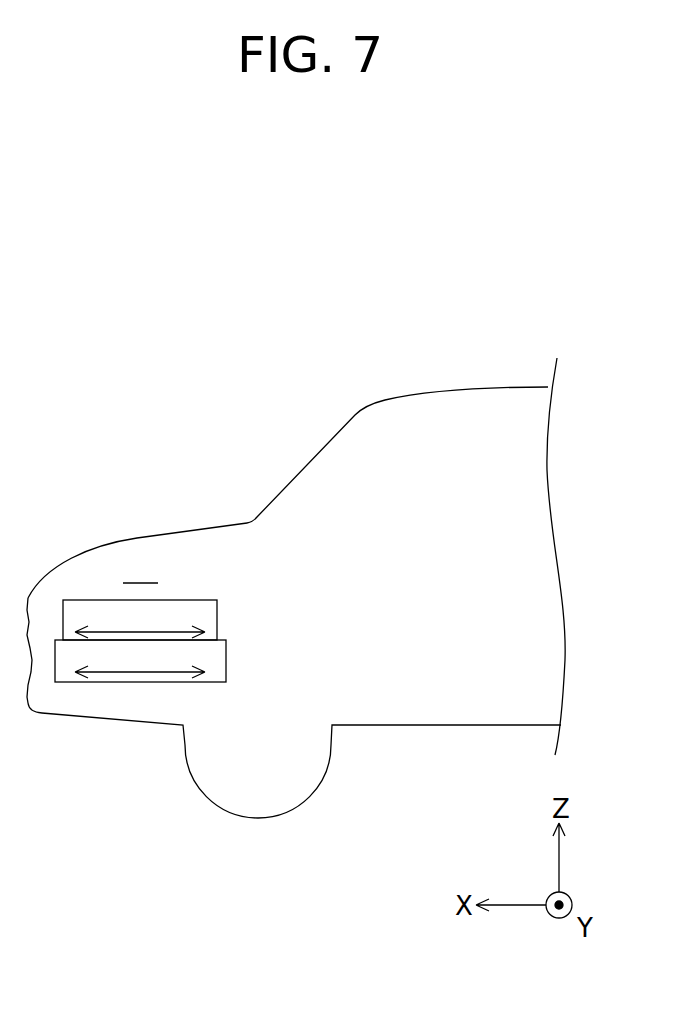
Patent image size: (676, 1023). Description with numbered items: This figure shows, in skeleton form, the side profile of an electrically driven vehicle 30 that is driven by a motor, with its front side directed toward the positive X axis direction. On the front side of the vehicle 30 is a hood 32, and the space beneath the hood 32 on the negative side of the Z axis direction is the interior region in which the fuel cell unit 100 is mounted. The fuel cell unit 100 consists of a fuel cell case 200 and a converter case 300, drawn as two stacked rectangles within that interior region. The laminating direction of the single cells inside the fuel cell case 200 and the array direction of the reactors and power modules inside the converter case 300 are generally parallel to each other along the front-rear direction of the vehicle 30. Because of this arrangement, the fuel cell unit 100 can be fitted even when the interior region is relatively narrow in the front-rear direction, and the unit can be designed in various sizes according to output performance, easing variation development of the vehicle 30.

The vehicle 30 is at (296, 541).
The hood 32 is at (137, 540).
The fuel cell unit 100 is at (193, 608).
The fuel cell case 200 is at (217, 627).
The converter case 300 is at (226, 655).